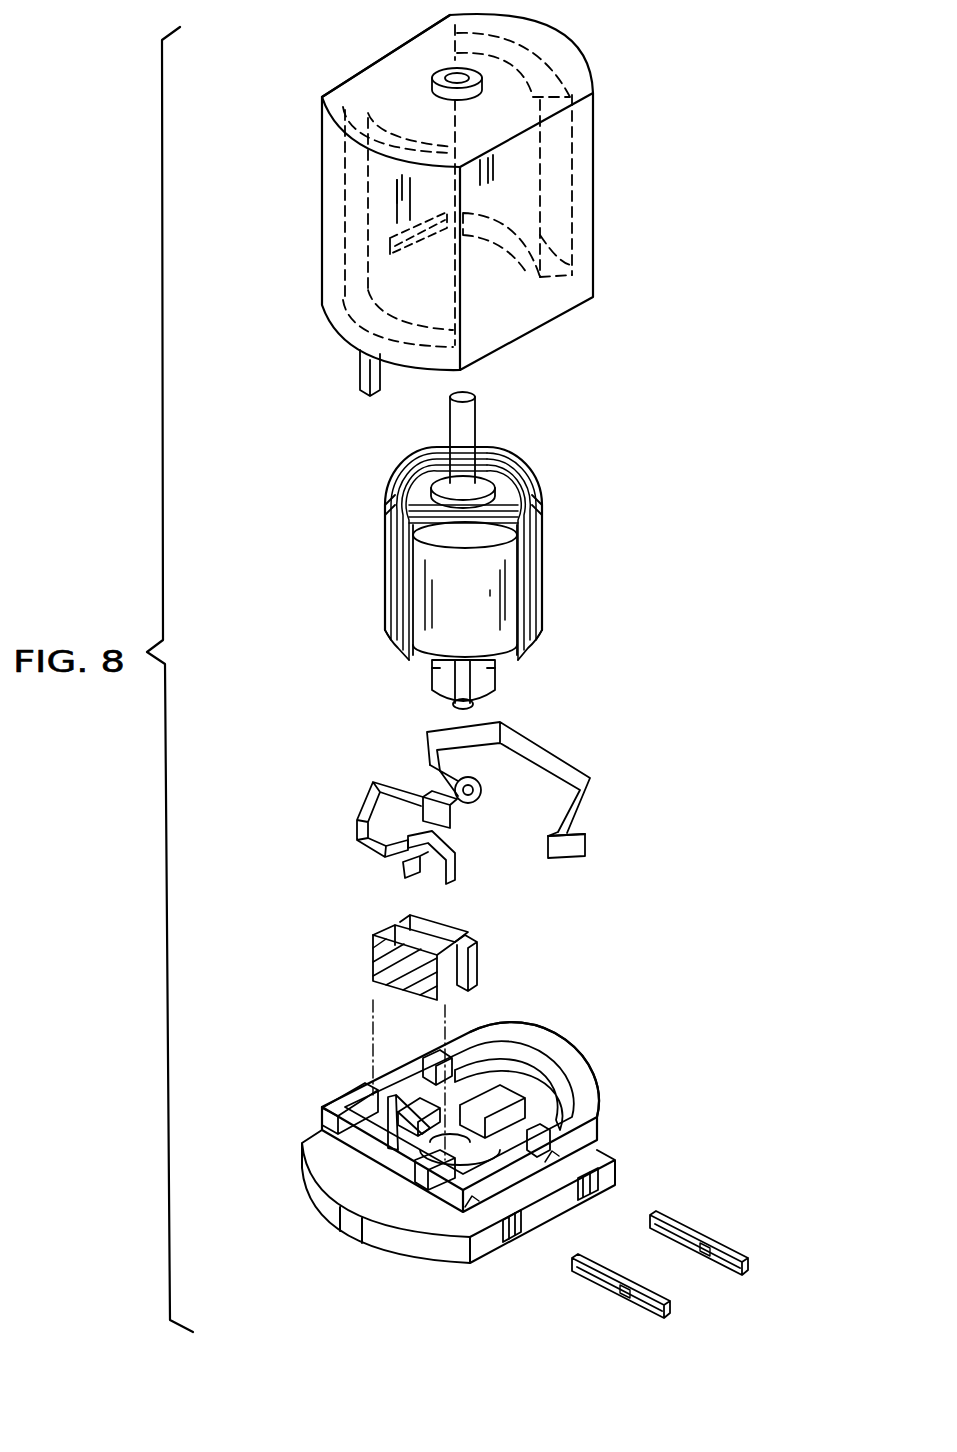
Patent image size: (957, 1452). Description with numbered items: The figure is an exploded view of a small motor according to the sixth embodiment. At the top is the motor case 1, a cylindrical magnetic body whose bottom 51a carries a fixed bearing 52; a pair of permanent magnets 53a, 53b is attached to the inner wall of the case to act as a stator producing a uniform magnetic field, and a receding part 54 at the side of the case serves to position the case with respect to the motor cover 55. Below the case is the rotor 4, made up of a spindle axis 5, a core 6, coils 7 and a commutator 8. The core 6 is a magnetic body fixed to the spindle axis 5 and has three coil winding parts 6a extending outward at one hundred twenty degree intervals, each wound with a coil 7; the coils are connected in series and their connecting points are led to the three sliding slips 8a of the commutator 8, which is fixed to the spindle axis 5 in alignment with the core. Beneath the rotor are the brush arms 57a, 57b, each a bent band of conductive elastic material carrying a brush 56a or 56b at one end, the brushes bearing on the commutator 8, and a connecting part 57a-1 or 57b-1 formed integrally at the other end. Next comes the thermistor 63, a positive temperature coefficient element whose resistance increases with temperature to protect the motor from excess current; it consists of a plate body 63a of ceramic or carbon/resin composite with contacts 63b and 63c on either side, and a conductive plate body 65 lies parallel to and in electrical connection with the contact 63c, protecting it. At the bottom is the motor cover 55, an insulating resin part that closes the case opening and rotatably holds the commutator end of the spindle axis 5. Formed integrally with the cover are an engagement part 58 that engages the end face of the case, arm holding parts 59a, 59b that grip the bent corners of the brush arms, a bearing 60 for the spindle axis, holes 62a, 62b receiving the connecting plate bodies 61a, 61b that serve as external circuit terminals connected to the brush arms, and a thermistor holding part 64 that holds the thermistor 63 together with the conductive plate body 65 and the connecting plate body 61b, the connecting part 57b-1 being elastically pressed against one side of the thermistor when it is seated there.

The motor case 1 is at (602, 162).
The bottom 51a is at (387, 75).
The bearing 52 is at (483, 80).
The permanent magnet 53a is at (345, 215).
The permanent magnet 53b is at (580, 232).
The receding part 54 is at (398, 252).
The rotor 4 is at (550, 460).
The spindle axis 5 is at (468, 428).
The core 6 is at (385, 472).
The coil winding part 6a is at (392, 497).
The coil 7 is at (432, 450).
The commutator 8 is at (495, 680).
The sliding slip 8a is at (442, 687).
The brush 56a is at (430, 767).
The brush 56b is at (420, 802).
The brush arm 57a is at (565, 770).
The connecting part 57a-1 is at (588, 860).
The brush arm 57b is at (362, 825).
The connecting part 57b-1 is at (405, 870).
The thermistor 63 is at (395, 1022).
The plate body 63a is at (392, 926).
The contact 63b is at (375, 1022).
The contact 63c is at (455, 930).
The conductive plate body 65 is at (412, 917).
The motor cover 55 is at (469, 1141).
The engagement part 58 is at (545, 1047).
The arm holding part 59a is at (330, 1115).
The arm holding part 59b is at (512, 1055).
The bearing 60 is at (495, 1142).
The hole 62a is at (585, 1178).
The hole 62b is at (512, 1245).
The thermistor holding part 64 is at (377, 1162).
The connecting plate body 61a is at (700, 1240).
The connecting plate body 61b is at (668, 1305).